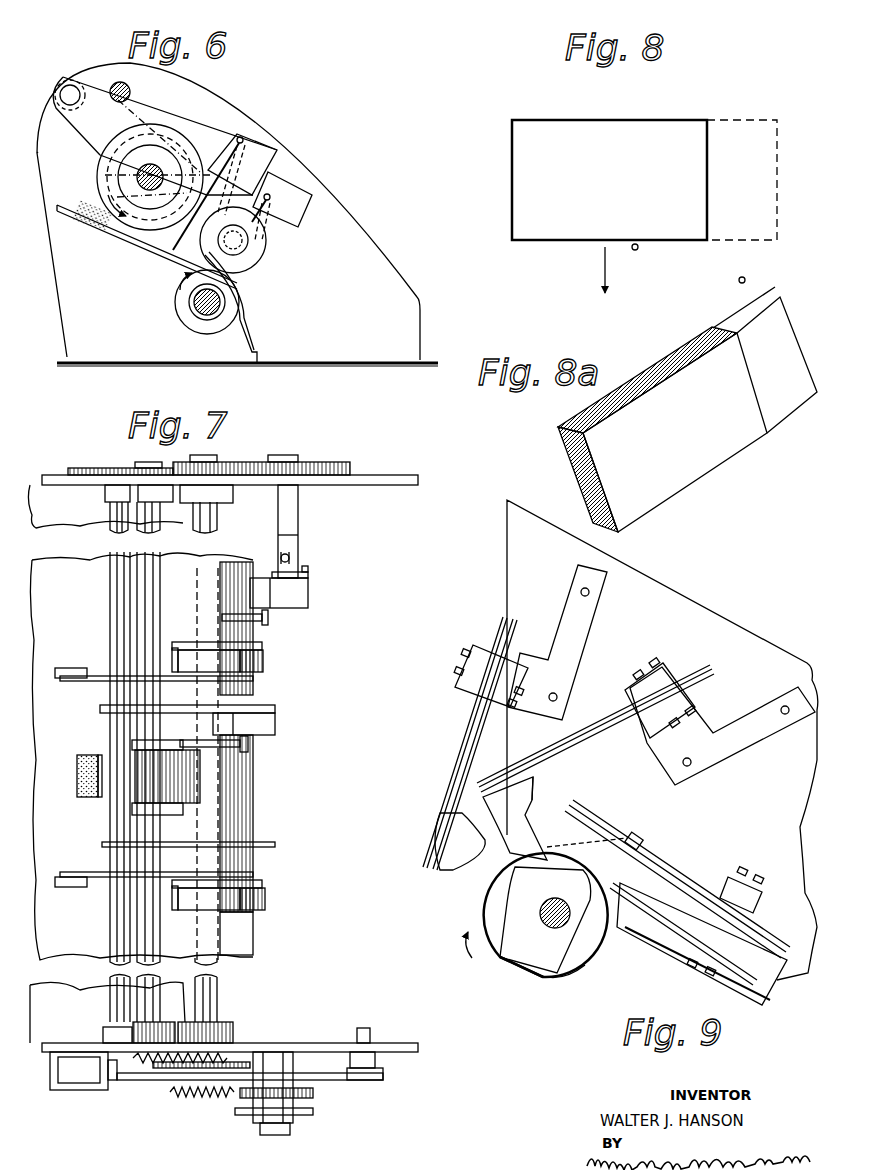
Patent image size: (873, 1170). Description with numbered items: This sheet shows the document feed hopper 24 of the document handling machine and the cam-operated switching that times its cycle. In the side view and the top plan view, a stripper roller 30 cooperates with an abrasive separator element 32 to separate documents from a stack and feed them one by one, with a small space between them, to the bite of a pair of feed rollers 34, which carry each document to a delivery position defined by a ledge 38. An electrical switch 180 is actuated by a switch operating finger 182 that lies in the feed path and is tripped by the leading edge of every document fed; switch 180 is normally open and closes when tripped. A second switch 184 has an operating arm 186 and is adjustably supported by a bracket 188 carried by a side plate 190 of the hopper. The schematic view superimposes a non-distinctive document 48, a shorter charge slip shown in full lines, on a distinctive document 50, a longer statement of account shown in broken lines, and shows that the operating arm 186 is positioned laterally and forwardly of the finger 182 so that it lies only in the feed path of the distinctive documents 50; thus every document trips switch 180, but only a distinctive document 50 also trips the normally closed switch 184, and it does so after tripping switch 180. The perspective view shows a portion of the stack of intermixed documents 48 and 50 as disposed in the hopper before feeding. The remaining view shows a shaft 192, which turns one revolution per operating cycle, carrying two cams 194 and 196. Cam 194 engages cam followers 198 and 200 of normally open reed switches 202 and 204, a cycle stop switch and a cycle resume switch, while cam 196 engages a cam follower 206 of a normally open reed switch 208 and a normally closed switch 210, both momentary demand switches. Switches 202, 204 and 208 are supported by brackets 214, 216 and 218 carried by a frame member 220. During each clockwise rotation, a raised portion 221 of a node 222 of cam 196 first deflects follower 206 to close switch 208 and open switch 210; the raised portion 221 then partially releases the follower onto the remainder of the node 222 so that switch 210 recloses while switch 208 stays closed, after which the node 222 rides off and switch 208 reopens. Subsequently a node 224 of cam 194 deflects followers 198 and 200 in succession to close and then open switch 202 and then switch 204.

In FIG. 6, the hopper 24 is at (258, 118).
In FIG. 7, the hopper 24 is at (273, 785).
In FIG. 6, the stripper roller 30 is at (192, 128).
In FIG. 7, the stripper roller 30 is at (102, 755).
In FIG. 6, the abrasive separator element 32 is at (90, 207).
In FIG. 7, the abrasive separator element 32 is at (85, 797).
In FIG. 6, the feed rollers 34 is at (262, 254).
In FIG. 7, the feed rollers 34 is at (262, 662).
In FIG. 6, the ledge 38 is at (250, 348).
In FIG. 7, the ledge 38 is at (250, 945).
In FIG. 8, the non-distinctive document 48 is at (613, 132).
In FIG. 8A, the non-distinctive document 48 is at (752, 433).
In FIG. 8, the distinctive document 50 is at (733, 130).
In FIG. 8A, the distinctive document 50 is at (777, 322).
In FIG. 6, the electrical switch 180 is at (253, 148).
In FIG. 7, the electrical switch 180 is at (265, 723).
In FIG. 6, the switch operating finger 182 is at (222, 157).
In FIG. 7, the switch operating finger 182 is at (205, 740).
In FIG. 8, the switch operating finger 182 is at (634, 250).
In FIG. 6, the second switch 184 is at (293, 197).
In FIG. 7, the second switch 184 is at (300, 593).
In FIG. 6, the operating arm 186 is at (270, 222).
In FIG. 7, the operating arm 186 is at (247, 632).
In FIG. 8, the operating arm 186 is at (739, 279).
In FIG. 7, the bracket 188 is at (293, 520).
In FIG. 7, the side plate 190 is at (235, 469).
In FIG. 9, the shaft 192 is at (555, 928).
In FIG. 9, the cam 194 is at (572, 983).
In FIG. 9, the cam 196 is at (592, 933).
In FIG. 9, the cam follower 198 is at (453, 867).
In FIG. 9, the cam follower 200 is at (523, 800).
In FIG. 9, the electrical reed switch 202 is at (447, 802).
In FIG. 9, the electrical reed switch 204 is at (590, 720).
In FIG. 9, the cam follower 206 is at (537, 860).
In FIG. 9, the electrical reed switch 208 is at (693, 873).
In FIG. 9, the electrical switch 210 is at (663, 923).
In FIG. 9, the bracket 214 is at (565, 623).
In FIG. 9, the bracket 216 is at (742, 723).
In FIG. 9, the bracket 218 is at (768, 990).
In FIG. 9, the frame member 220 is at (687, 622).
In FIG. 9, the raised portion 221 is at (500, 957).
In FIG. 9, the node 222 is at (533, 973).
In FIG. 9, the node 224 is at (643, 850).